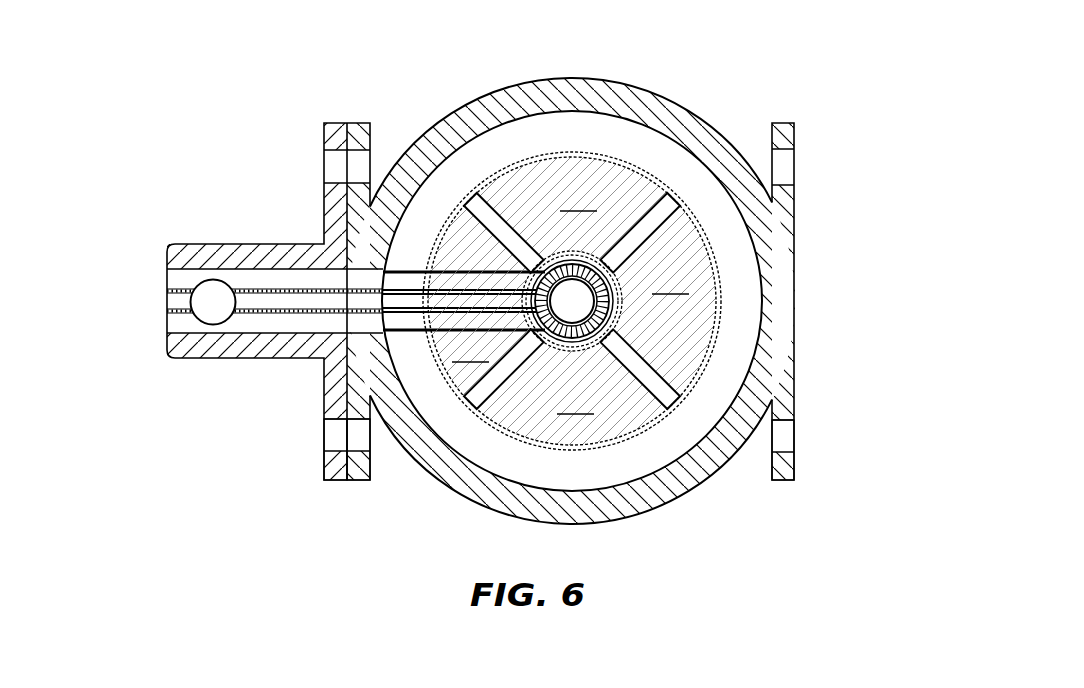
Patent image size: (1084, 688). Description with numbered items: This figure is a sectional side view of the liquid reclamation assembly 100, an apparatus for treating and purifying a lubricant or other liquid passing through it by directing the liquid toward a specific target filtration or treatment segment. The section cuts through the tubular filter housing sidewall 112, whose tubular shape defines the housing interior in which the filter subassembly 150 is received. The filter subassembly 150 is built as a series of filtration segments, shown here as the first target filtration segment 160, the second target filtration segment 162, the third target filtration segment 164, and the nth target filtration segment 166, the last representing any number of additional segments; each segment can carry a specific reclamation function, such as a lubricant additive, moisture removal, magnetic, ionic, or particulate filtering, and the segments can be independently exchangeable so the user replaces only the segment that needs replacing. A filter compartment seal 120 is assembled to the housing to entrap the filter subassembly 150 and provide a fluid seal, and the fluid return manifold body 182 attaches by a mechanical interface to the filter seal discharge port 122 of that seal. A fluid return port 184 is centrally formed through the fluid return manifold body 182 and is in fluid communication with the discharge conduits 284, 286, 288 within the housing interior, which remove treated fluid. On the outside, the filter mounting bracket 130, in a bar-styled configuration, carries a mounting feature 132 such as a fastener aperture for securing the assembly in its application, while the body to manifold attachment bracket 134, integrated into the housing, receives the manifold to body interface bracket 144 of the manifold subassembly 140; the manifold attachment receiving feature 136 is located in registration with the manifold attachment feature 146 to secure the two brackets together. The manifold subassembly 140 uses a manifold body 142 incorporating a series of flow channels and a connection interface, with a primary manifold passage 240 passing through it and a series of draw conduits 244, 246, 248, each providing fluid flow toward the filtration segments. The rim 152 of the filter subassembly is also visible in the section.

The liquid reclamation assembly 100 is at (542, 344).
The tubular filter housing sidewall 112 is at (683, 108).
The filter compartment seal 120 is at (702, 190).
The filter seal discharge port 122 is at (700, 232).
The filter mounting bracket 130 is at (782, 482).
The mounting feature 132 is at (797, 436).
The body to manifold attachment bracket 134 is at (358, 122).
The manifold attachment receiving feature 136 is at (371, 440).
The manifold subassembly 140 is at (227, 349).
The manifold body 142 is at (257, 359).
The manifold to body interface bracket 144 is at (336, 122).
The manifold attachment feature 146 is at (323, 437).
The filter subassembly 150 is at (542, 344).
The rotor rim 152 is at (680, 412).
The first target filtration segment 160 is at (578, 198).
The second target filtration segment 162 is at (670, 281).
The third target filtration segment 164 is at (575, 401).
The nth target filtration segment 166 is at (470, 349).
The fluid return manifold body 182 is at (622, 306).
The fluid return port 184 is at (611, 292).
The primary manifold passage 240 is at (213, 279).
The draw conduit 244 is at (168, 289).
The draw conduit 246 is at (168, 299).
The draw conduit 248 is at (168, 313).
The discharge conduit 284 is at (470, 271).
The discharge conduit 286 is at (440, 288).
The discharge conduit 288 is at (420, 313).